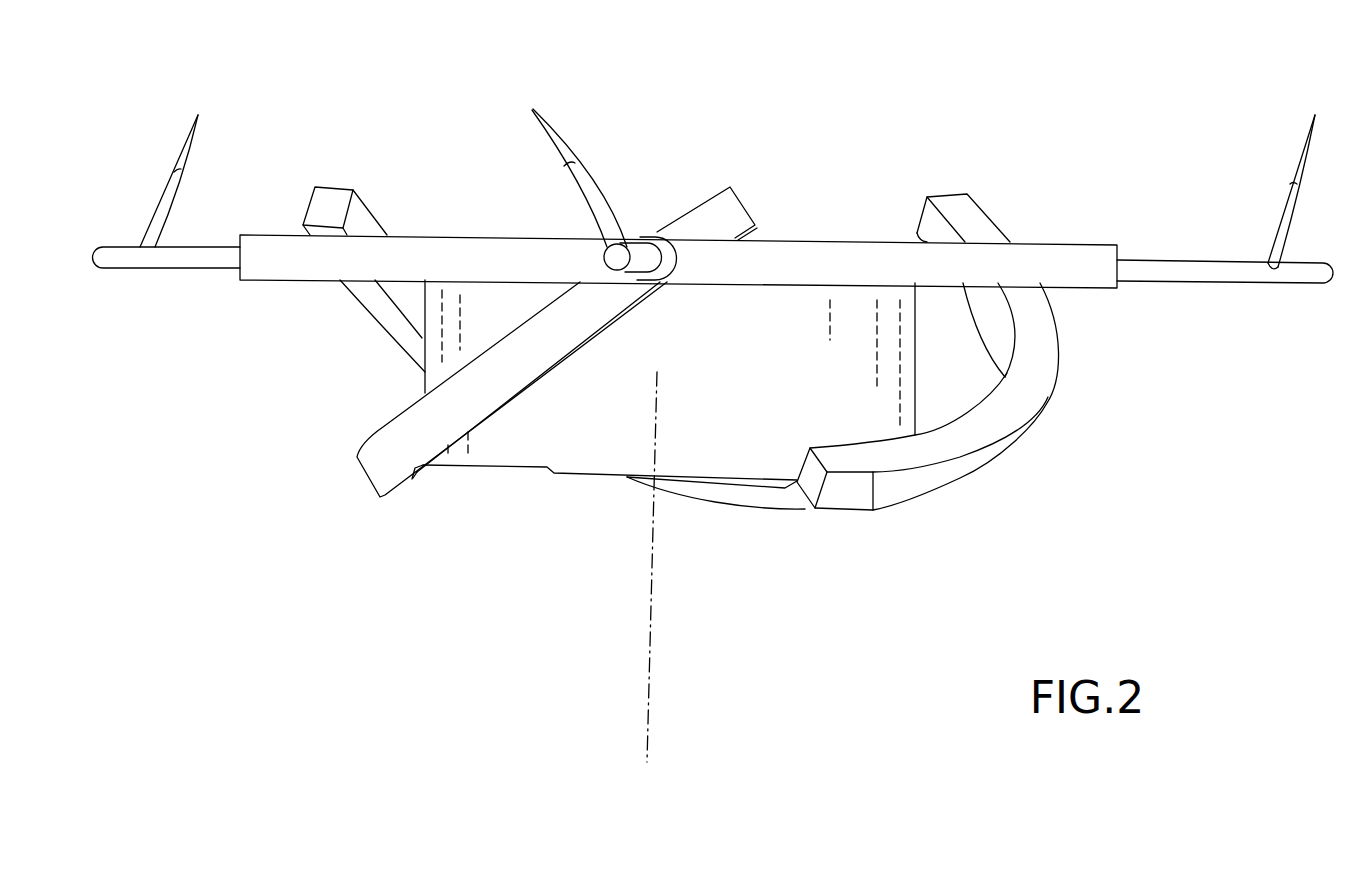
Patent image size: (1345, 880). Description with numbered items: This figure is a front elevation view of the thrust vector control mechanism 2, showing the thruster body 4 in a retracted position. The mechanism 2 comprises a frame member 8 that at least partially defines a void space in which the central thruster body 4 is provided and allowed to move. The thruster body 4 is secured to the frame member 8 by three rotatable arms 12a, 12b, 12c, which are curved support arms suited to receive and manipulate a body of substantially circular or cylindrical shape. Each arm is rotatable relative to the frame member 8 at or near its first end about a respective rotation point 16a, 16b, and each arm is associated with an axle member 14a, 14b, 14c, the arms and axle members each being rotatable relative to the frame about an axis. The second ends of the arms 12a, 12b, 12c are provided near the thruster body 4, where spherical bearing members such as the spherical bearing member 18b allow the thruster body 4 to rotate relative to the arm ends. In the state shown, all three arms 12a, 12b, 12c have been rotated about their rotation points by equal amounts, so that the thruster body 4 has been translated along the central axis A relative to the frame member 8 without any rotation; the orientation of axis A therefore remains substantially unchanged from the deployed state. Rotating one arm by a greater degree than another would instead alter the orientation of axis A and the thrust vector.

The thrust vector control mechanism 2 is at (872, 182).
The thruster body 4 is at (510, 485).
The frame member 8 is at (276, 254).
The rotatable arm 12a is at (392, 445).
The rotatable arm 12b is at (1001, 474).
The rotatable arm 12c is at (338, 185).
The axle member 14a is at (578, 206).
The axle member 14b is at (1150, 288).
The axle member 14c is at (160, 187).
The rotation point 16a is at (652, 236).
The rotation point 16b is at (983, 295).
The spherical bearing member 18b is at (868, 491).
The axis A is at (685, 746).